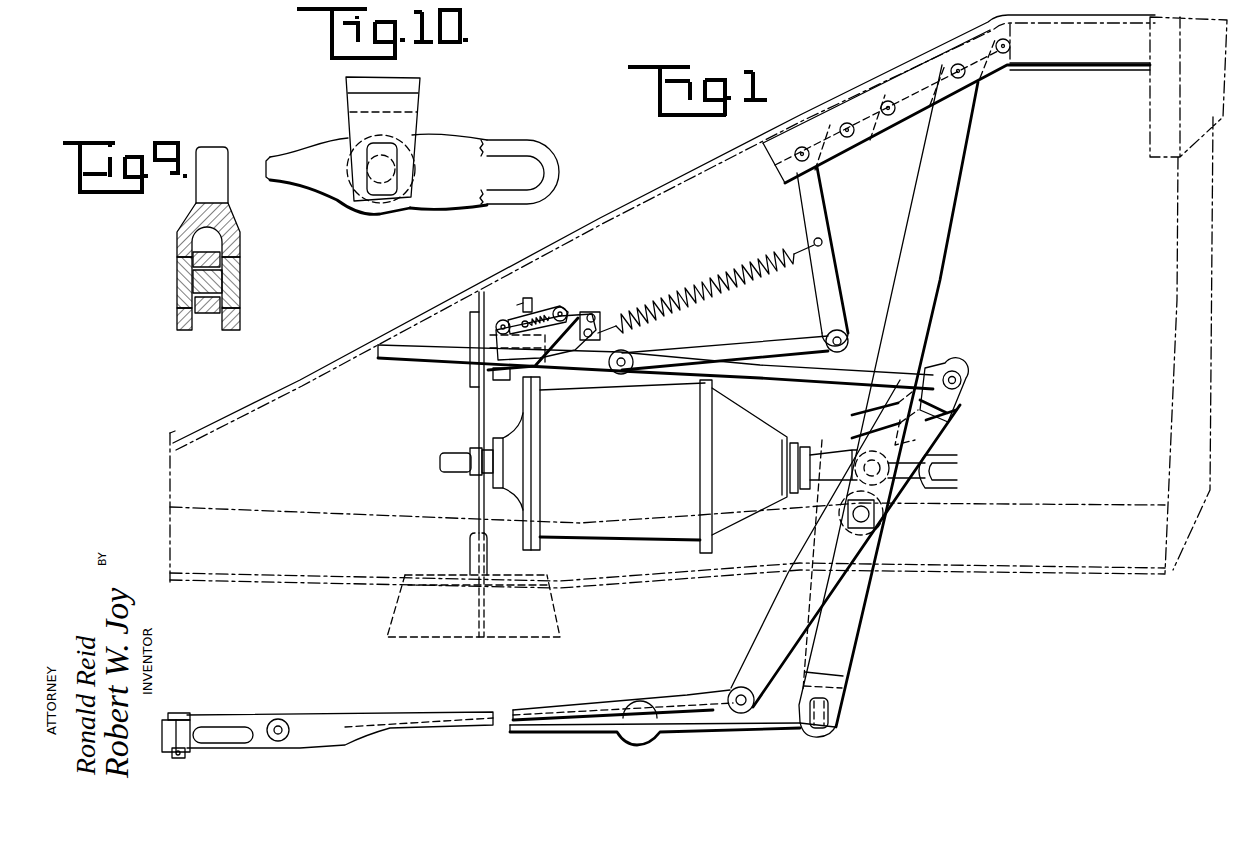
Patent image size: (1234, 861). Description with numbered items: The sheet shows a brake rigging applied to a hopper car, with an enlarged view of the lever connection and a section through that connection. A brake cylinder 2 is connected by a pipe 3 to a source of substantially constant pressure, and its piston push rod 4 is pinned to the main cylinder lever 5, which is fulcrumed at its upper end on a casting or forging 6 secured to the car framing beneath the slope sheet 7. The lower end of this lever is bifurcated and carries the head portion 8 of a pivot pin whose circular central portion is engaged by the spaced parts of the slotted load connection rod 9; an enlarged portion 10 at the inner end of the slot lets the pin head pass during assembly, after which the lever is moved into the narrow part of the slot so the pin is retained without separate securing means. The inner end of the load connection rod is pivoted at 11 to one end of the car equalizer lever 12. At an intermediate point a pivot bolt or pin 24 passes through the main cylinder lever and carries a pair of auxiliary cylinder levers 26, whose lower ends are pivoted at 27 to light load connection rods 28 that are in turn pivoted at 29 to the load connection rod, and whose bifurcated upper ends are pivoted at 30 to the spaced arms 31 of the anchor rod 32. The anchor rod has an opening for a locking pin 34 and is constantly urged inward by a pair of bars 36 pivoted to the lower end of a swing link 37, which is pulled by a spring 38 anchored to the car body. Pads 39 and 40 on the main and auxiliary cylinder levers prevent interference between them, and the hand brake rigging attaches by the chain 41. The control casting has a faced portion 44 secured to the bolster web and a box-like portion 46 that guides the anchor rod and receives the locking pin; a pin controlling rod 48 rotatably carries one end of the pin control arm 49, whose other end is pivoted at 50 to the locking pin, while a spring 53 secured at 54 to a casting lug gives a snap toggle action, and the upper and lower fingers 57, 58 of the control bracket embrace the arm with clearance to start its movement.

In FIG. 1, the brake cylinder 2 is at (646, 465).
In FIG. 1, the pipe 3 is at (455, 466).
In FIG. 1, the push rod 4 is at (818, 458).
In FIG. 9, the main cylinder lever 5 is at (212, 162).
In FIG. 10, the main cylinder lever 5 is at (413, 88).
In FIG. 1, the main cylinder lever 5 is at (888, 401).
In FIG. 1, the casting or forging 6 is at (1023, 57).
In FIG. 1, the slope sheet 7 is at (668, 180).
In FIG. 9, the head portion of pivot pin 8 is at (240, 304).
In FIG. 10, the head portion of pivot pin 8 is at (381, 192).
In FIG. 1, the head portion of pivot pin 8 is at (832, 708).
In FIG. 9, the load connection rod 9 is at (207, 316).
In FIG. 10, the load connection rod 9 is at (323, 178).
In FIG. 1, the load connection rod 9 is at (557, 733).
In FIG. 1, the enlarged portion 10 is at (639, 746).
In FIG. 1, the pivot 11 is at (183, 715).
In FIG. 1, the car equalizer lever 12 is at (170, 738).
In FIG. 1, the pivot bolt or pin 24 is at (868, 515).
In FIG. 1, the auxiliary cylinder levers 26 is at (845, 543).
In FIG. 1, the pivot 27 is at (733, 693).
In FIG. 1, the light load connection rods 28 is at (582, 708).
In FIG. 1, the pivot 29 is at (282, 721).
In FIG. 1, the pivot 30 is at (962, 380).
In FIG. 1, the spaced arms 31 is at (935, 370).
In FIG. 1, the anchor rod 32 is at (402, 350).
In FIG. 1, the locking pin 34 is at (497, 380).
In FIG. 1, the bars 36 is at (749, 360).
In FIG. 1, the swing link 37 is at (830, 273).
In FIG. 1, the spring or tension means 38 is at (693, 291).
In FIG. 1, the pad 39 is at (885, 415).
In FIG. 1, the pad 40 is at (915, 440).
In FIG. 1, the chain 41 is at (957, 478).
In FIG. 1, the faced portion 44 is at (477, 328).
In FIG. 1, the box-like portion 46 is at (540, 368).
In FIG. 1, the pin controlling rod 48 is at (562, 307).
In FIG. 1, the latch arm 49 is at (553, 300).
In FIG. 1, the pivot 50 is at (499, 317).
In FIG. 1, the spring 53 is at (548, 310).
In FIG. 1, the spring anchorage 54 is at (596, 316).
In FIG. 1, the upper finger 57 is at (527, 297).
In FIG. 1, the lower finger 58 is at (520, 304).